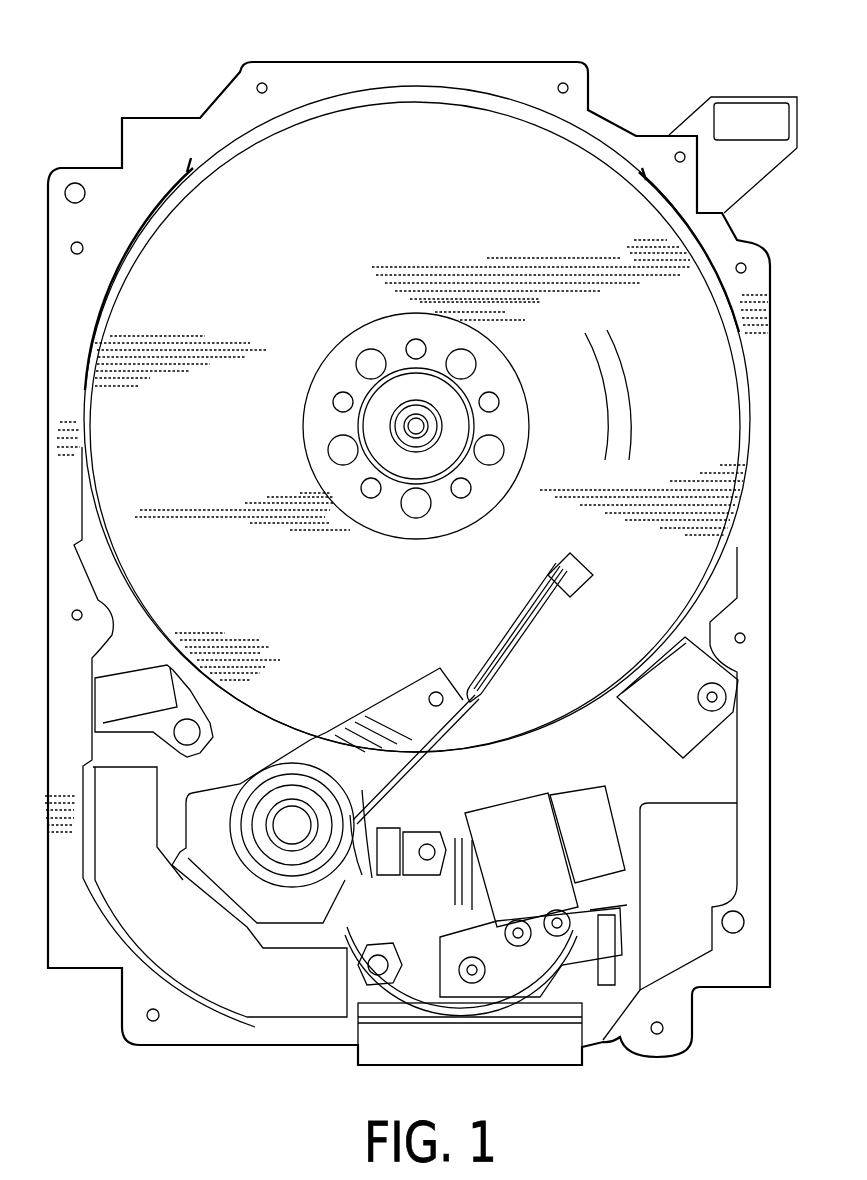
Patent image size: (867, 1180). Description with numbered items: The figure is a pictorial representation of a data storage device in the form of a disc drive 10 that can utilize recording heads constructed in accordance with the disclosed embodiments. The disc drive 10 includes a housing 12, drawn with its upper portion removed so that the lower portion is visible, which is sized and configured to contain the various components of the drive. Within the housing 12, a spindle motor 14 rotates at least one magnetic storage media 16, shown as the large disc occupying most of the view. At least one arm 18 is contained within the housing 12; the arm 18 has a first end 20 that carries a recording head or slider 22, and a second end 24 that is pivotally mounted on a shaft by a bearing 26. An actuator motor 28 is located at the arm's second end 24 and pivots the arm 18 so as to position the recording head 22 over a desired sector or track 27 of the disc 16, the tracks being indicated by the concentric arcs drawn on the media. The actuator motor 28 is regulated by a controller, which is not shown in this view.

The disc drive 10 is at (96, 104).
The housing 12 is at (543, 77).
The spindle motor 14 is at (410, 430).
The magnetic storage media 16 is at (334, 230).
The arm 18 is at (399, 712).
The first end 20 is at (515, 603).
The recording head 22 is at (585, 566).
The second end 24 is at (313, 767).
The bearing 26 is at (280, 812).
The track 27 is at (619, 403).
The actuator motor 28 is at (188, 940).